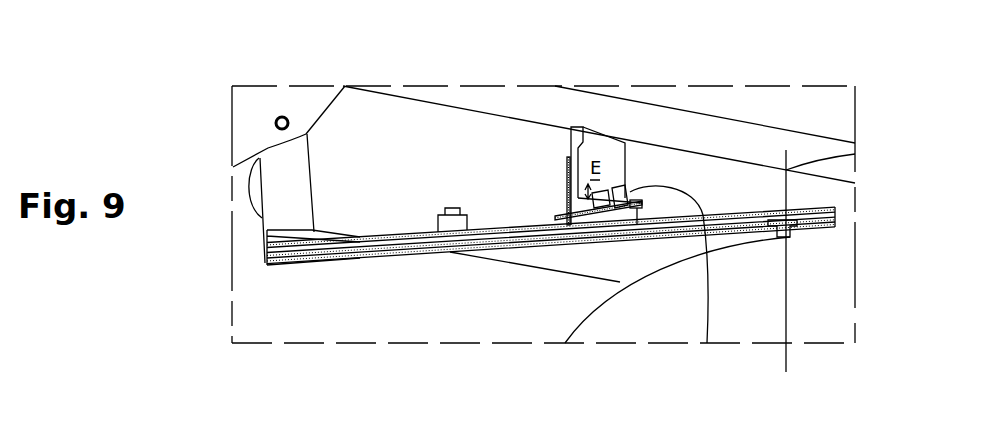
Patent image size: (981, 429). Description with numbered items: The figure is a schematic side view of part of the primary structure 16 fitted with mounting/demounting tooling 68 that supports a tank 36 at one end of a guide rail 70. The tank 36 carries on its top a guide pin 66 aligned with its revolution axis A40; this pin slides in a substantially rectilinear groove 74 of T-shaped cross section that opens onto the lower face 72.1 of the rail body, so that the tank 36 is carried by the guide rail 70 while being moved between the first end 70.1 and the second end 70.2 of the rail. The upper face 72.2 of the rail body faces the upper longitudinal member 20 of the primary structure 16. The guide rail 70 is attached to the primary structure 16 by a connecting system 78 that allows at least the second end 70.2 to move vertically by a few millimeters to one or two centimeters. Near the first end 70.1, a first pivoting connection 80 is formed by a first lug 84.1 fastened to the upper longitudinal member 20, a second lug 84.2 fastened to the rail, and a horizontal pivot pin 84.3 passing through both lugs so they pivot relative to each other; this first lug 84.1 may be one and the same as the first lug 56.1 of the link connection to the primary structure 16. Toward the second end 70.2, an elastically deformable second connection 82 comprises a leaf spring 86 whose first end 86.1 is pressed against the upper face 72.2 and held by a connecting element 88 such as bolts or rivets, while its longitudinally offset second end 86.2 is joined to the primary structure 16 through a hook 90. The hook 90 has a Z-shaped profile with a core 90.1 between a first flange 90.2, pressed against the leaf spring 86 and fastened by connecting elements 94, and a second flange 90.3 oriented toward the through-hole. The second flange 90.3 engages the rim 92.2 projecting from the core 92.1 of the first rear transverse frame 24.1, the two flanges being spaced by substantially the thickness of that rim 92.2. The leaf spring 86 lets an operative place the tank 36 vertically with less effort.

The primary structure 16 is at (797, 130).
The upper longitudinal member 20 is at (479, 96).
The first rear transverse frame 24.1 is at (613, 134).
The tank 36 is at (816, 316).
The first lug 56.1 is at (243, 100).
The guide pin 66 is at (794, 239).
The mounting/demounting tooling 68 is at (400, 227).
The guide rail 70 is at (745, 208).
The first end 70.1 is at (265, 258).
The second end 70.2 is at (836, 212).
The lower face 72.1 is at (737, 235).
The upper face 72.2 is at (763, 213).
The groove 74 is at (821, 236).
The connecting system 78 is at (316, 94).
The first pivoting connection 80 is at (276, 106).
The second connection 82 is at (641, 169).
The first lug 84.1 is at (247, 123).
The second lug 84.2 is at (287, 188).
The pivot pin 84.3 is at (278, 132).
The leaf spring 86 is at (451, 208).
The first end 86.1 is at (451, 232).
The second end 86.2 is at (638, 208).
The connecting element 88 is at (496, 220).
The hook 90 is at (606, 187).
The core 90.1 is at (605, 218).
The first flange 90.2 is at (633, 208).
The second flange 90.3 is at (585, 193).
The core 92.1 is at (568, 162).
The rim 92.2 is at (602, 143).
The connecting elements 94 is at (707, 343).
The revolution axis A40 is at (855, 154).